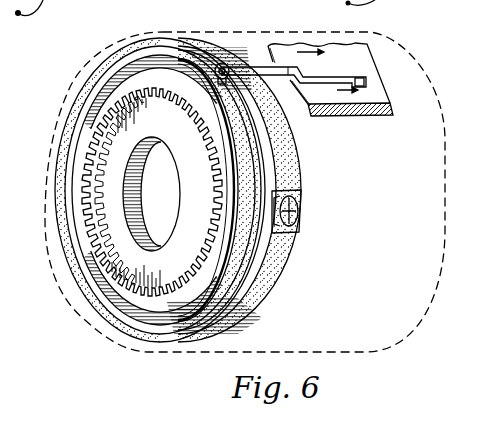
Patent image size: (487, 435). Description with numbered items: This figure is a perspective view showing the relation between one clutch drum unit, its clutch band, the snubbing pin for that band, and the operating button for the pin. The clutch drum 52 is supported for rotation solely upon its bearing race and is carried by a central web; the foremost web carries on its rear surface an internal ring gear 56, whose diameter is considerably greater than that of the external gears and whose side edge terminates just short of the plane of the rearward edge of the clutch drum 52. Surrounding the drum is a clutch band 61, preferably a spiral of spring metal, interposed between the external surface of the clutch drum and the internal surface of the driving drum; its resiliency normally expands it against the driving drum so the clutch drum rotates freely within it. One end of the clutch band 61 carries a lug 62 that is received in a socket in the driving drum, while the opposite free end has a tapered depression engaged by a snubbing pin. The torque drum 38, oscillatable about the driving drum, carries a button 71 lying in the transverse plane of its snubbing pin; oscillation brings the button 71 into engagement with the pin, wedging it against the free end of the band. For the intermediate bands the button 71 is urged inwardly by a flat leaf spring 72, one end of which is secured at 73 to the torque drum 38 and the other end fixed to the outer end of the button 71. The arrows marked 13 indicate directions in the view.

The direction arrows 13 is at (319, 75).
The torque drum 38 is at (378, 96).
The clutch drum 52 is at (283, 178).
The internal ring gear 56 is at (100, 250).
The clutch band 61 is at (272, 272).
The lug 62 is at (293, 211).
The button 71 is at (230, 65).
The flat leaf spring 72 is at (312, 72).
The securing point of leaf spring 73 is at (357, 72).